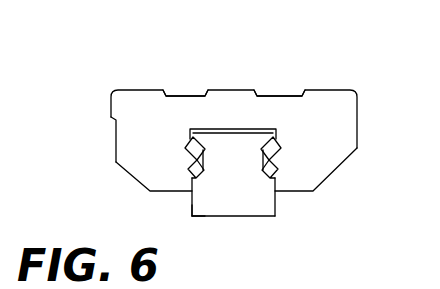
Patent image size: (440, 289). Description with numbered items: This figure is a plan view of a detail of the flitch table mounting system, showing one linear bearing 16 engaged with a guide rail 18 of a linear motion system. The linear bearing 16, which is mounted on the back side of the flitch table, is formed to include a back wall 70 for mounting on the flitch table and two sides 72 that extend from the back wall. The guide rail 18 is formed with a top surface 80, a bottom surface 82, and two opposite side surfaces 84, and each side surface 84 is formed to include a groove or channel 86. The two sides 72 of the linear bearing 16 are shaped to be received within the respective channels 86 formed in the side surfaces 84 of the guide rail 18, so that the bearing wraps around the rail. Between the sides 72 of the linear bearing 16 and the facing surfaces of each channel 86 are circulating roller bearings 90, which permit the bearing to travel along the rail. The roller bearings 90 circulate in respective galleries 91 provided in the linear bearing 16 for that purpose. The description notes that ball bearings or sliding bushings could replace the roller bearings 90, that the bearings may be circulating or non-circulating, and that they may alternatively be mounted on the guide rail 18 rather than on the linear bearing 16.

The linear bearing 16 is at (123, 106).
The guide rail 18 is at (220, 208).
The back wall 70 is at (185, 96).
The side 72 is at (117, 162).
The top surface 80 is at (229, 129).
The bottom surface 82 is at (232, 218).
The side surface 84 is at (190, 205).
The channel 86 is at (206, 143).
The circulating roller bearing 90 is at (184, 148).
The gallery 91 is at (188, 146).